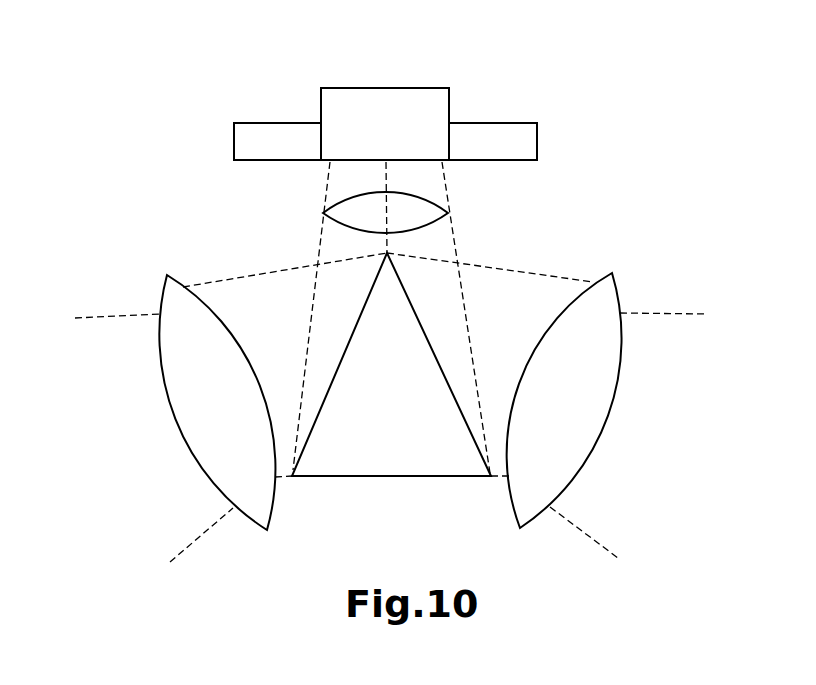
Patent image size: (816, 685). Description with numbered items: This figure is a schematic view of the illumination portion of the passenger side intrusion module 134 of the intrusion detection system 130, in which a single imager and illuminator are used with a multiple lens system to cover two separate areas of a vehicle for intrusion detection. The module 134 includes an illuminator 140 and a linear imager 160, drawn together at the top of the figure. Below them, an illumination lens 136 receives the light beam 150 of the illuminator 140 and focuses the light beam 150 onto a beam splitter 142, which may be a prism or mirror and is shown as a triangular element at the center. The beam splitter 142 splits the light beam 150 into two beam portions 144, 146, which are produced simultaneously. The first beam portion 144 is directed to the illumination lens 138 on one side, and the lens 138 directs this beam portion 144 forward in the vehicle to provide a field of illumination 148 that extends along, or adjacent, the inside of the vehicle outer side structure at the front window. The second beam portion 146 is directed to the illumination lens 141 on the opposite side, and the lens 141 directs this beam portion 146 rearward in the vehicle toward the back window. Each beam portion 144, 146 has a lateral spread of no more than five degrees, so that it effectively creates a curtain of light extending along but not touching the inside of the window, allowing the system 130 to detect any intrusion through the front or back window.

The intrusion detection system 130 is at (118, 435).
The passenger side intrusion module 134 is at (107, 373).
The illumination lens 136 is at (322, 213).
The illumination lens 138 is at (162, 290).
The illuminator 140 is at (353, 87).
The illumination lens 141 is at (623, 347).
The beam splitter 142 is at (394, 477).
The first beam portion 144 is at (275, 270).
The second beam portion 146 is at (512, 270).
The field of illumination 148 is at (197, 503).
The light beam 150 is at (445, 177).
The linear imager 160 is at (233, 138).